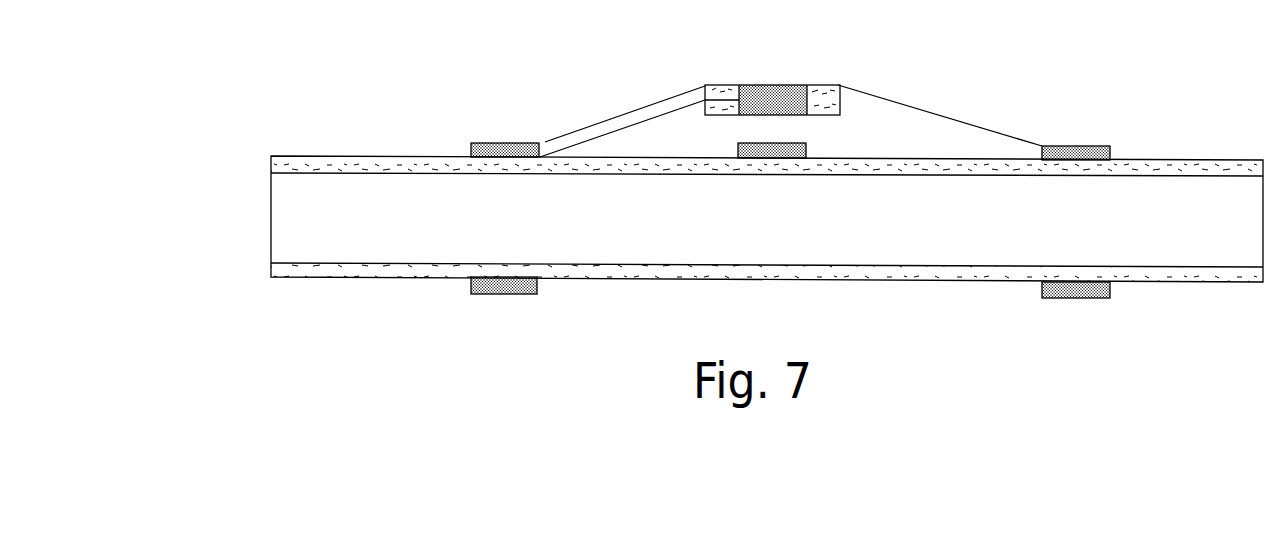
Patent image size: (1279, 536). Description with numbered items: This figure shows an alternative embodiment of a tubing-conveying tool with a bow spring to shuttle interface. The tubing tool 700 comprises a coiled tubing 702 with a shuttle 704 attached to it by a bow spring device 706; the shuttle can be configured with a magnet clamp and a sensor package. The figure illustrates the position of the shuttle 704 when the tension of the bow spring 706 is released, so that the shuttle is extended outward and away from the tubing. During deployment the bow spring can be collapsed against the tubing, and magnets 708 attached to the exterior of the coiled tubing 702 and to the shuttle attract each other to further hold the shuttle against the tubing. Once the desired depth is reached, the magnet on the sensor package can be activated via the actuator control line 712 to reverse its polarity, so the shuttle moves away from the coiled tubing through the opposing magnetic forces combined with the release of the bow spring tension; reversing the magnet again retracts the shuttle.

The tubing tool 700 is at (587, 308).
The coiled tubing 702 is at (890, 272).
The shuttle 704 is at (705, 85).
The bow spring device 706 is at (543, 141).
The magnets 708 is at (738, 158).
The actuator control line 712 is at (278, 155).